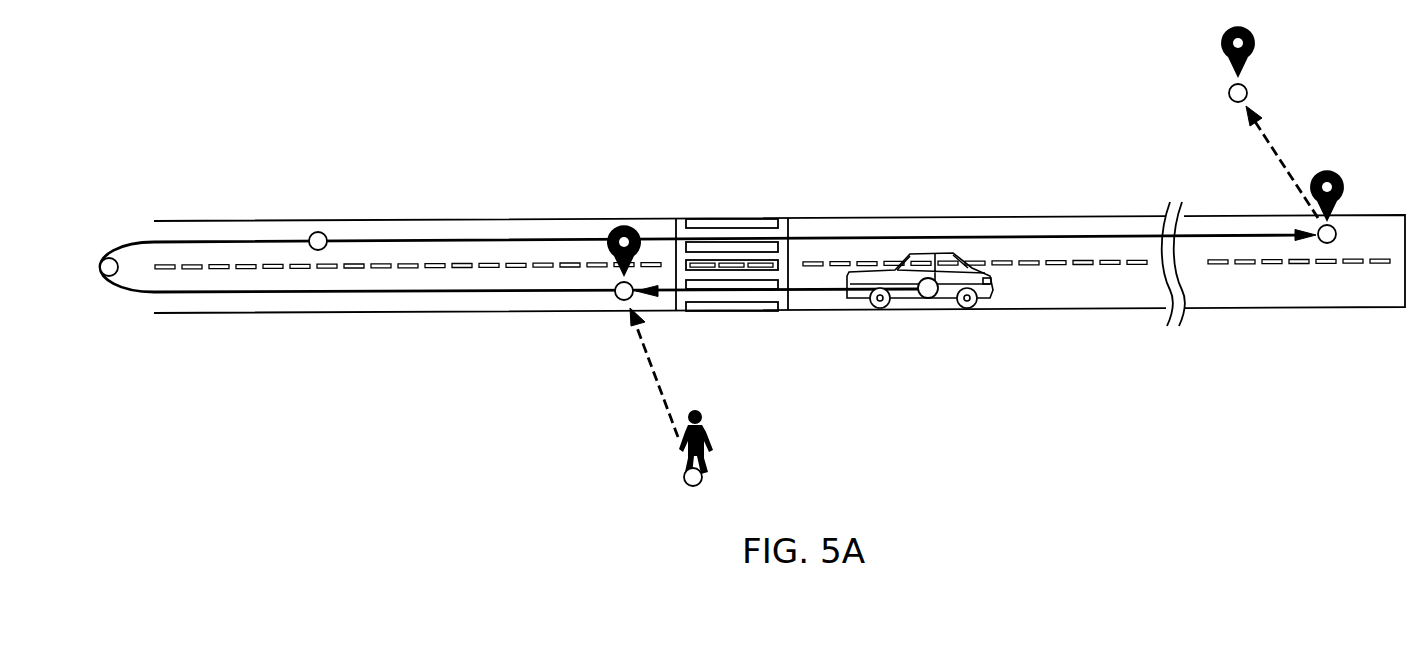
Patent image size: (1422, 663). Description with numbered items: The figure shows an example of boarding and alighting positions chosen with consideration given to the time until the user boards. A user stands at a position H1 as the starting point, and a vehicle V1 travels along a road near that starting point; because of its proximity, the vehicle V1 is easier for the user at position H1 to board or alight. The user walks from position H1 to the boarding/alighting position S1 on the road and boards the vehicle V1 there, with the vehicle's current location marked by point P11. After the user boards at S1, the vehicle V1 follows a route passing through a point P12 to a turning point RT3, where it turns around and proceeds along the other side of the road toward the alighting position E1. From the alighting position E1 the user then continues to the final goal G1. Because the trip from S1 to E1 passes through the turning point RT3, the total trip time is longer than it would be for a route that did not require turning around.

The turning point RT3 is at (109, 258).
The point on route P12 is at (318, 232).
The boarding/alighting position S1 is at (624, 301).
The position of the user H1 is at (684, 478).
The vehicle V1 is at (933, 258).
The vehicle position point P11 is at (927, 298).
The alighting position E1 is at (1327, 243).
The goal point G1 is at (1247, 91).